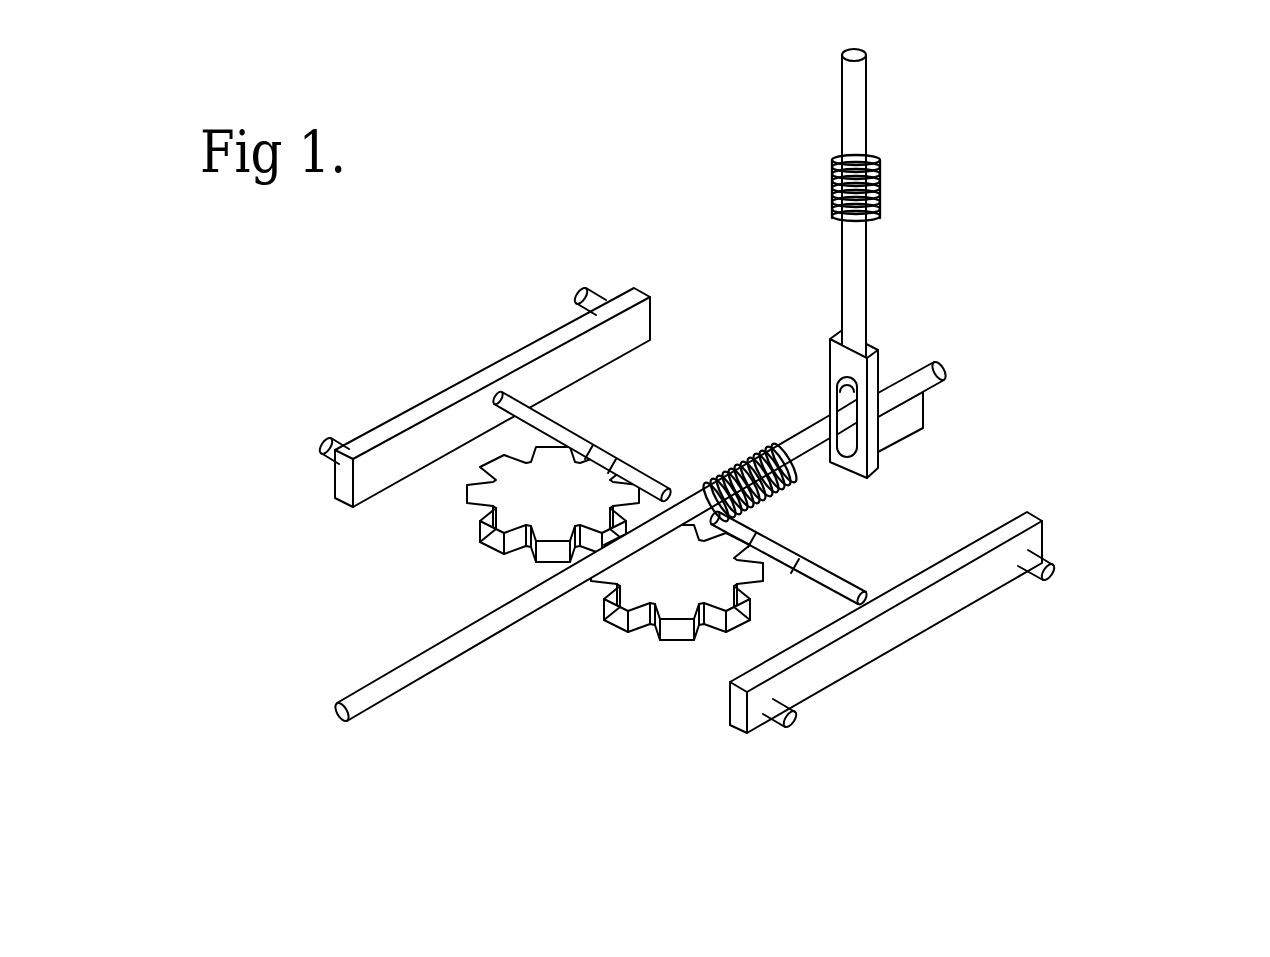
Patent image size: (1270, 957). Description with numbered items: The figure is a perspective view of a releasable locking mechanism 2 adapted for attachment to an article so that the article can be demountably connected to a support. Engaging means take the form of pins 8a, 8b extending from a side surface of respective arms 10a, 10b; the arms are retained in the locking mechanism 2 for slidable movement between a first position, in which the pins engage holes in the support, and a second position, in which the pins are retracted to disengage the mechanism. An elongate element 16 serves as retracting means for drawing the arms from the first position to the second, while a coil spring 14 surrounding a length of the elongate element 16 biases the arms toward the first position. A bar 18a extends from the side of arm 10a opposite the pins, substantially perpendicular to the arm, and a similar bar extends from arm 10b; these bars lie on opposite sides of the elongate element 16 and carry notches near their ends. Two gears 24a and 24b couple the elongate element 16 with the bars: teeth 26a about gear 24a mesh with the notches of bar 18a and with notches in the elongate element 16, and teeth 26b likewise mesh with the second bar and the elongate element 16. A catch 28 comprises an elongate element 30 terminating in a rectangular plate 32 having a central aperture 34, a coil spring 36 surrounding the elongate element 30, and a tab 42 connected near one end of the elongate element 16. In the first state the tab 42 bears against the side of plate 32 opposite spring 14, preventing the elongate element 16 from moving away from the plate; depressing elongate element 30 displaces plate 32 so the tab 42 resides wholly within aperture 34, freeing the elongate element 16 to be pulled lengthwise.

The releasable locking mechanism 2 is at (1114, 264).
The pin 8a is at (246, 357).
The pin 8b is at (1060, 560).
The arm 10a is at (492, 387).
The arm 10b is at (913, 647).
The coil spring 14 is at (725, 463).
The elongate element 16 is at (407, 694).
The bar 18a is at (540, 417).
The gear 24a is at (502, 495).
The gear 24b is at (668, 590).
The teeth 26a is at (527, 528).
The teeth 26b is at (681, 647).
The catch 28 is at (955, 293).
The elongate element 30 is at (880, 273).
The rectangular plate 32 is at (898, 375).
The central aperture 34 is at (848, 385).
The coil spring 36 is at (888, 182).
The tab 42 is at (920, 435).